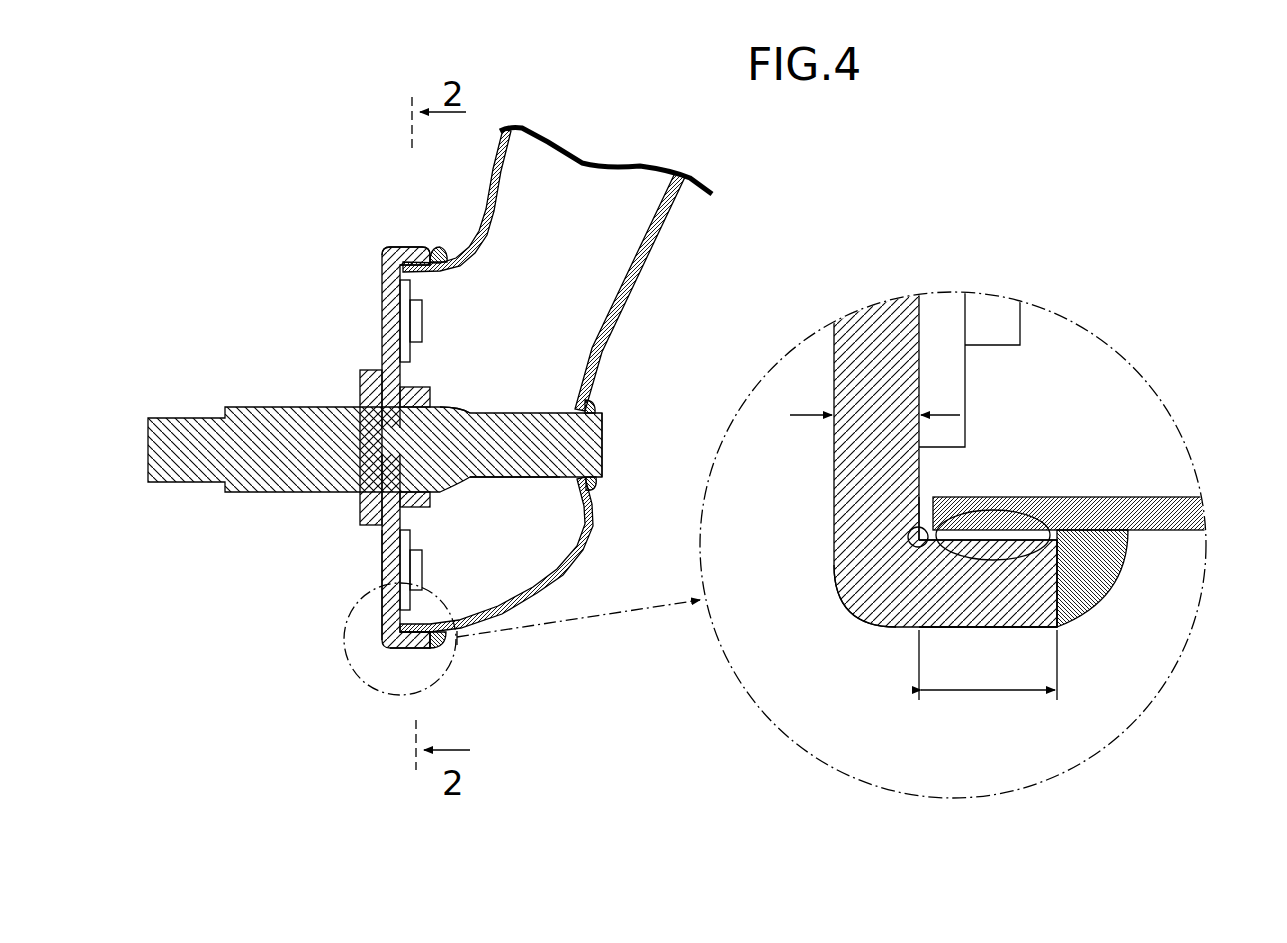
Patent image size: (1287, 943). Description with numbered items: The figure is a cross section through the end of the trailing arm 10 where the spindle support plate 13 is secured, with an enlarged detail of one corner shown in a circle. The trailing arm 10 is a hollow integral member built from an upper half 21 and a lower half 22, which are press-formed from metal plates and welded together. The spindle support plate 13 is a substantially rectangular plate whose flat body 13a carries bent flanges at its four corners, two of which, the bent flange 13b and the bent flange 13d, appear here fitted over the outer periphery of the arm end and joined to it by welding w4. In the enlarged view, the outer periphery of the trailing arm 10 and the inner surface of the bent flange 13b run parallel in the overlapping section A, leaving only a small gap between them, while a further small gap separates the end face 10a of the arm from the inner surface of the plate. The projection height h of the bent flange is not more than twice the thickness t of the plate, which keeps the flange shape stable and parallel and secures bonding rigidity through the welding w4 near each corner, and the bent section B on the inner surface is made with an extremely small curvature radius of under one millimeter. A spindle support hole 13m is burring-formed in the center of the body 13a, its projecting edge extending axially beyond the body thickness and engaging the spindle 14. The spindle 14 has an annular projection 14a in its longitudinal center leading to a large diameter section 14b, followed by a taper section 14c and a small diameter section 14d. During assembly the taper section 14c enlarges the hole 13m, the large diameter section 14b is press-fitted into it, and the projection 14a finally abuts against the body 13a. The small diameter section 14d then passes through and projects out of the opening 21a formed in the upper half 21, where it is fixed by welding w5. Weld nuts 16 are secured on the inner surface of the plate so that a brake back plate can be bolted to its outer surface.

The trailing arm 10 is at (668, 223).
The end face of the trailing arm 10a is at (397, 264).
The spindle support plate 13 is at (378, 316).
The flat body 13a is at (380, 572).
The bent flange 13b is at (413, 650).
The bent flange 13d is at (404, 247).
The spindle support hole 13m is at (401, 442).
The spindle 14 is at (252, 404).
The annular projection 14a is at (368, 392).
The large diameter section 14b is at (436, 400).
The taper section 14c is at (478, 410).
The small diameter section 14d is at (539, 466).
The weld nut 16 is at (414, 298).
The upper half 21 is at (631, 287).
The opening 21a is at (605, 443).
The lower half 22 is at (504, 198).
The welding w4 is at (438, 248).
The welding w5 is at (596, 404).
The thickness of the spindle support plate t is at (855, 437).
The projection height of the bent flanges h is at (988, 665).
The section A is at (1010, 500).
The bent section B is at (875, 560).